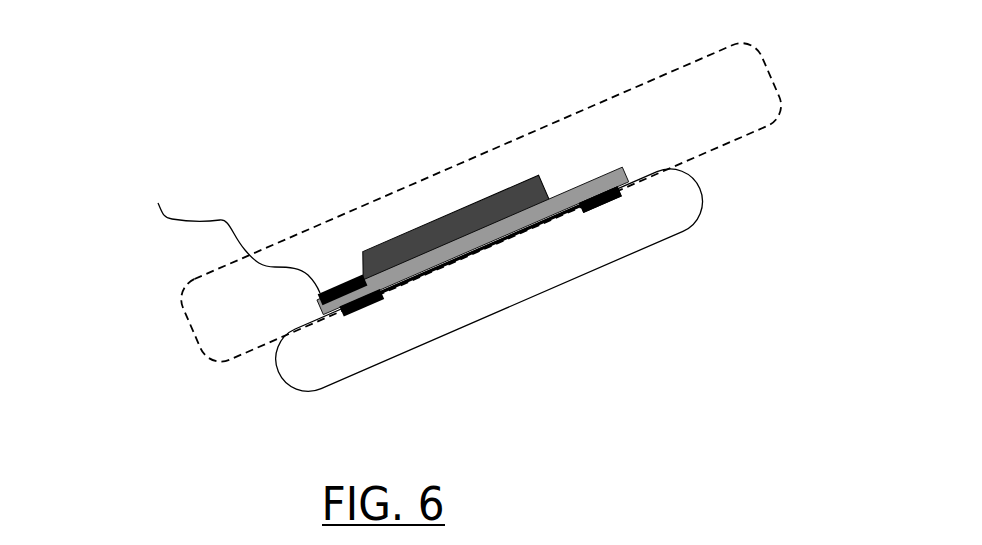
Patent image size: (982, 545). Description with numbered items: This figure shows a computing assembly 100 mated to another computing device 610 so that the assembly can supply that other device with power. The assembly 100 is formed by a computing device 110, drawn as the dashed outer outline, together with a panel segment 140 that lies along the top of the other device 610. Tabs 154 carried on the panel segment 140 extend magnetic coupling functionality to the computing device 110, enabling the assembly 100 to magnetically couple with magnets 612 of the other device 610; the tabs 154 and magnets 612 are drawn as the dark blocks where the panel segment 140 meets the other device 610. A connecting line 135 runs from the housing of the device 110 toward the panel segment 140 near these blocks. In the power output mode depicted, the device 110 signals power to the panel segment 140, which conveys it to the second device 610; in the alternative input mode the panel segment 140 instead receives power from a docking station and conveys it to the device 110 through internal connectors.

The computing assembly 100 is at (195, 156).
The computing device 110 is at (697, 102).
The wire 135 is at (223, 232).
The panel segment 140 is at (598, 177).
The tabs 154 is at (363, 290).
The other computing device 610 is at (318, 352).
The magnets 612 is at (383, 299).